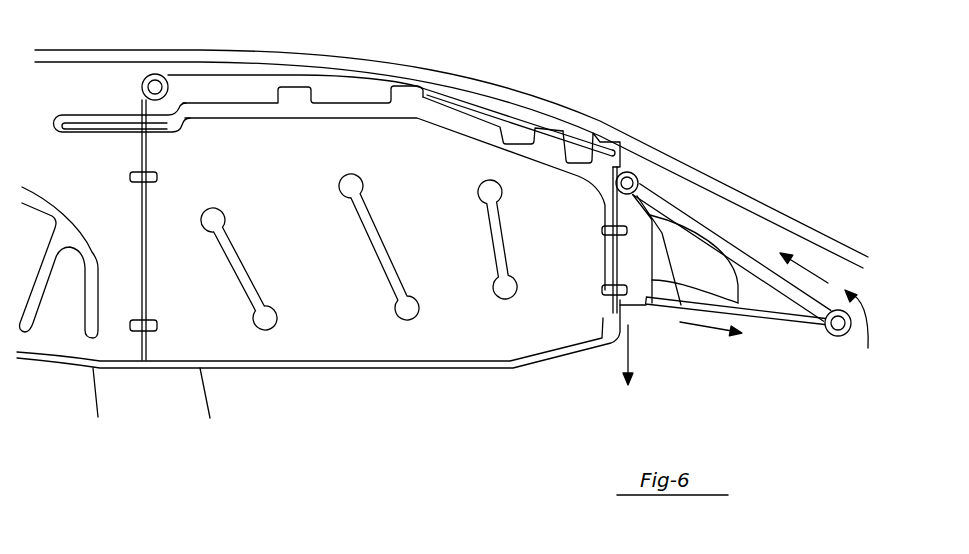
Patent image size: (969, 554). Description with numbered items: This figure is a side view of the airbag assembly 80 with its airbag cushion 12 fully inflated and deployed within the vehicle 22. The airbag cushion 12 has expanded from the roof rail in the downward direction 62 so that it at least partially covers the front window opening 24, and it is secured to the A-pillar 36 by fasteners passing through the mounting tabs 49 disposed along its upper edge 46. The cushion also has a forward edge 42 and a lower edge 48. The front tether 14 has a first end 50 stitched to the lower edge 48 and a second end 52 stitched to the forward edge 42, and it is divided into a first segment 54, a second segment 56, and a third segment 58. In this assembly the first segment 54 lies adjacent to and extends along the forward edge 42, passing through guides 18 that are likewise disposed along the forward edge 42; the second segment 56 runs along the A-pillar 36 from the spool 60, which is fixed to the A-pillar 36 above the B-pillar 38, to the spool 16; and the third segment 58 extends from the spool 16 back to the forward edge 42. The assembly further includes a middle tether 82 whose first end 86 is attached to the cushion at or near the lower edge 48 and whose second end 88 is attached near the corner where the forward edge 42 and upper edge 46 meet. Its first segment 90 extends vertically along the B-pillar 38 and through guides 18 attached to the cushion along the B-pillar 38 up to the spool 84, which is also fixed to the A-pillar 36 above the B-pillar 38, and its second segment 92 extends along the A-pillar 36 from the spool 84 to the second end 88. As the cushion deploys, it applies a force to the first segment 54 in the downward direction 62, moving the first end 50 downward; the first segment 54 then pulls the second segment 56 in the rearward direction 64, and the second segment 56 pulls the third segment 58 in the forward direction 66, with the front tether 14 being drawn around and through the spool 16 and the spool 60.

The airbag cushion 12 is at (250, 103).
The front tether 14 is at (762, 250).
The spool 16 is at (838, 326).
The guides 18 is at (157, 183).
The vehicle 22 is at (778, 112).
The front window opening 24 is at (672, 240).
The A-pillar 36 is at (631, 150).
The B-pillar 38 is at (180, 395).
The forward edge 42 is at (738, 303).
The upper edge 46 is at (200, 103).
The lower edge 48 is at (428, 362).
The mounting tabs 49 is at (372, 90).
The first end 50 is at (605, 313).
The second end 52 is at (655, 305).
The first segment 54 is at (618, 250).
The second segment 56 is at (733, 235).
The third segment 58 is at (772, 328).
The spool 60 is at (616, 183).
The downward direction 62 is at (628, 358).
The rearward direction 64 is at (813, 272).
The forward direction 66 is at (708, 331).
The airbag assembly 80 is at (863, 329).
The middle tether 82 is at (463, 97).
The spool 84 is at (142, 88).
The first end 86 is at (146, 358).
The second end 88 is at (607, 147).
The first segment 90 is at (140, 152).
The second segment 92 is at (508, 112).